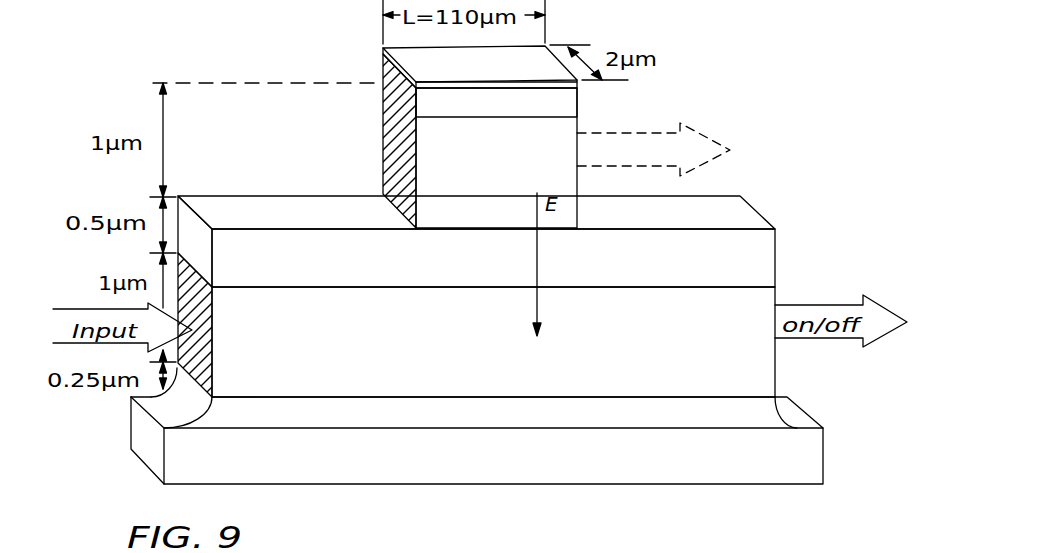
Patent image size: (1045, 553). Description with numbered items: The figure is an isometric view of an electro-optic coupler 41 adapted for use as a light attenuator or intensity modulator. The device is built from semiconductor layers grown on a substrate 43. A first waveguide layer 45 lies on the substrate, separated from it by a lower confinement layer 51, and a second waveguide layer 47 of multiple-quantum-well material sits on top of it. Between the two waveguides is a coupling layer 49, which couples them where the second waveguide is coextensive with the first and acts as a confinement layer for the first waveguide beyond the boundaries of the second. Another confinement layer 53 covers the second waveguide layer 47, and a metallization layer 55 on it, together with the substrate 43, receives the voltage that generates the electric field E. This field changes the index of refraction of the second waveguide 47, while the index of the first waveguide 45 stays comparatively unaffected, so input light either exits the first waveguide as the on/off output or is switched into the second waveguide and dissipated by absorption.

The electro-optic coupler 41 is at (773, 127).
The substrate 43 is at (790, 461).
The first waveguide layer 45 is at (757, 366).
The second waveguide layer 47 is at (441, 145).
The coupling layer 49 is at (757, 267).
The confinement layer 51 is at (752, 414).
The confinement layer 53 is at (560, 106).
The metallization layer 55 is at (533, 58).